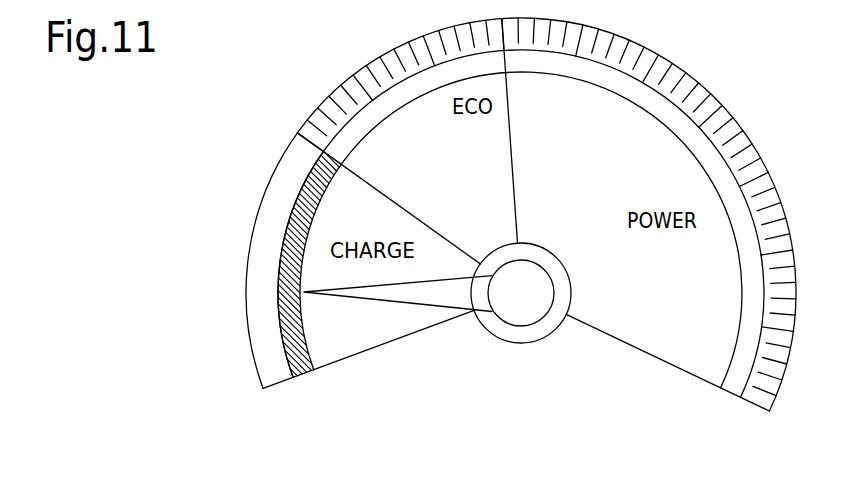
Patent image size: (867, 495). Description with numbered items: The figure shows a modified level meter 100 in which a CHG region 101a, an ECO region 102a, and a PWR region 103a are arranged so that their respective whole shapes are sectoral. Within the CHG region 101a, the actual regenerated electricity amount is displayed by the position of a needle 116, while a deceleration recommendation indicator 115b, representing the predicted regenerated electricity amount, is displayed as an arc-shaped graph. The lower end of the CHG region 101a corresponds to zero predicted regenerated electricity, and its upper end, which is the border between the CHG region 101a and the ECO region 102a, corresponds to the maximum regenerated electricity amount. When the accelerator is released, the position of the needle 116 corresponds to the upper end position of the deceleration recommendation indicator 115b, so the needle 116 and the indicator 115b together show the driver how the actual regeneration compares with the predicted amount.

The level meter 100 is at (280, 65).
The CHG region 101a is at (263, 196).
The ECO region 102a is at (363, 67).
The PWR region 103a is at (701, 87).
The deceleration recommendation indicator 115b is at (279, 273).
The needle 116 is at (406, 305).